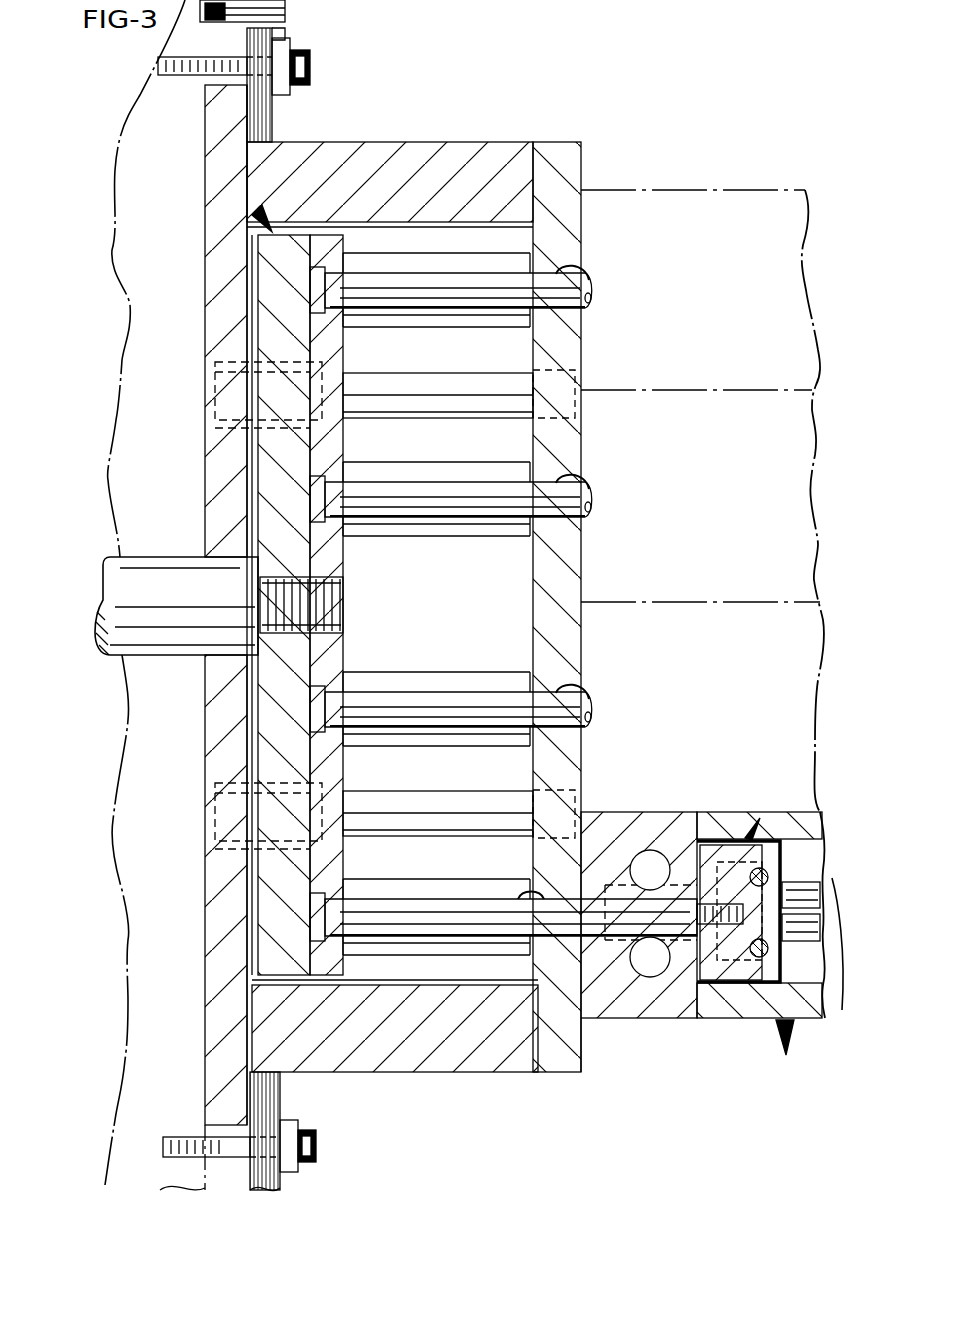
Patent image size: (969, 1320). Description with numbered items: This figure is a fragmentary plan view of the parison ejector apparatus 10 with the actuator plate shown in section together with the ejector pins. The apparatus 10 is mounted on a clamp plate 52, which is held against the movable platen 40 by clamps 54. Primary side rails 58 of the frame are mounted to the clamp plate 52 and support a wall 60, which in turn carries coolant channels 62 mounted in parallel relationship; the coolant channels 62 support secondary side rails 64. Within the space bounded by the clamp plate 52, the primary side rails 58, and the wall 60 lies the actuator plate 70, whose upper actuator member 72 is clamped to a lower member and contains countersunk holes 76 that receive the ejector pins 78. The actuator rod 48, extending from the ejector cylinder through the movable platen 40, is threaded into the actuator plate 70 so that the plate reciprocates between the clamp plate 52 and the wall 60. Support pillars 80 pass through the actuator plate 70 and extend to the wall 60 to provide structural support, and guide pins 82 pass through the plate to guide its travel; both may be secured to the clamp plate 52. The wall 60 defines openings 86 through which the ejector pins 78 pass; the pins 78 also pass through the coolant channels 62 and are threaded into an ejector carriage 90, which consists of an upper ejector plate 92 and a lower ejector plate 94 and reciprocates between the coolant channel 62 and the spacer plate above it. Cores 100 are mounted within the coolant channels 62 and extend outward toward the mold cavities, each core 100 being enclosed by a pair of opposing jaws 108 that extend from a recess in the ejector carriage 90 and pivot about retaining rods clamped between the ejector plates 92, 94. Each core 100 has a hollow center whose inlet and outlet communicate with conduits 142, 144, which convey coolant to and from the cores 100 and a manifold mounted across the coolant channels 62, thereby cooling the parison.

The parison ejector apparatus 10 is at (782, 1035).
The movable platen 40 is at (122, 335).
The actuator rod 48 is at (166, 588).
The clamp plate 52 is at (205, 180).
The clamps 54 is at (277, 97).
The primary side rails 58 is at (433, 142).
The wall 60 is at (556, 155).
The coolant channels 62 is at (612, 832).
The secondary side rails 64 is at (718, 822).
The actuator plate 70 is at (254, 214).
The upper actuator member 72 is at (340, 245).
The countersunk holes 76 is at (352, 308).
The ejector pins 78 is at (596, 298).
The support pillars 80 is at (454, 312).
The guide pins 82 is at (512, 380).
The openings 86 is at (588, 280).
The ejector carriage 90 is at (752, 830).
The upper ejector plate 92 is at (782, 855).
The lower ejector plate 94 is at (745, 845).
The cores 100 is at (605, 1018).
The jaws 108 is at (795, 1022).
The conduit 142 is at (650, 960).
The conduit 144 is at (650, 868).